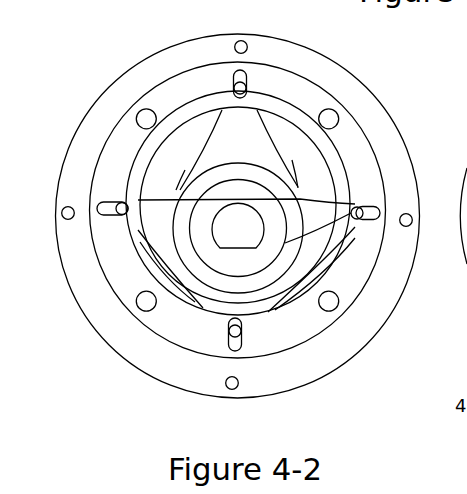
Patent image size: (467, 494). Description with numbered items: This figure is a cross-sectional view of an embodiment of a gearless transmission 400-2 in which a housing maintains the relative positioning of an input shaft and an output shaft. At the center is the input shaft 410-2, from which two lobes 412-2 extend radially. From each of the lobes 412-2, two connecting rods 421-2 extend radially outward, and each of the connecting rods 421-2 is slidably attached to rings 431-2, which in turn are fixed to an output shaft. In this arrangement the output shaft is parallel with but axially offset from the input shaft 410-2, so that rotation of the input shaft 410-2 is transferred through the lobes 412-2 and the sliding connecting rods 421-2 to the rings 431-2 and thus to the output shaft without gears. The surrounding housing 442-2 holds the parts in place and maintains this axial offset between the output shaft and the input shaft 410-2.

The gearless transmission 400-2 is at (101, 72).
The input shaft 410-2 is at (241, 223).
The lobe 412-2 is at (237, 267).
The connecting rod 421-2 is at (315, 236).
The ring 431-2 is at (294, 329).
The housing 442-2 is at (202, 379).